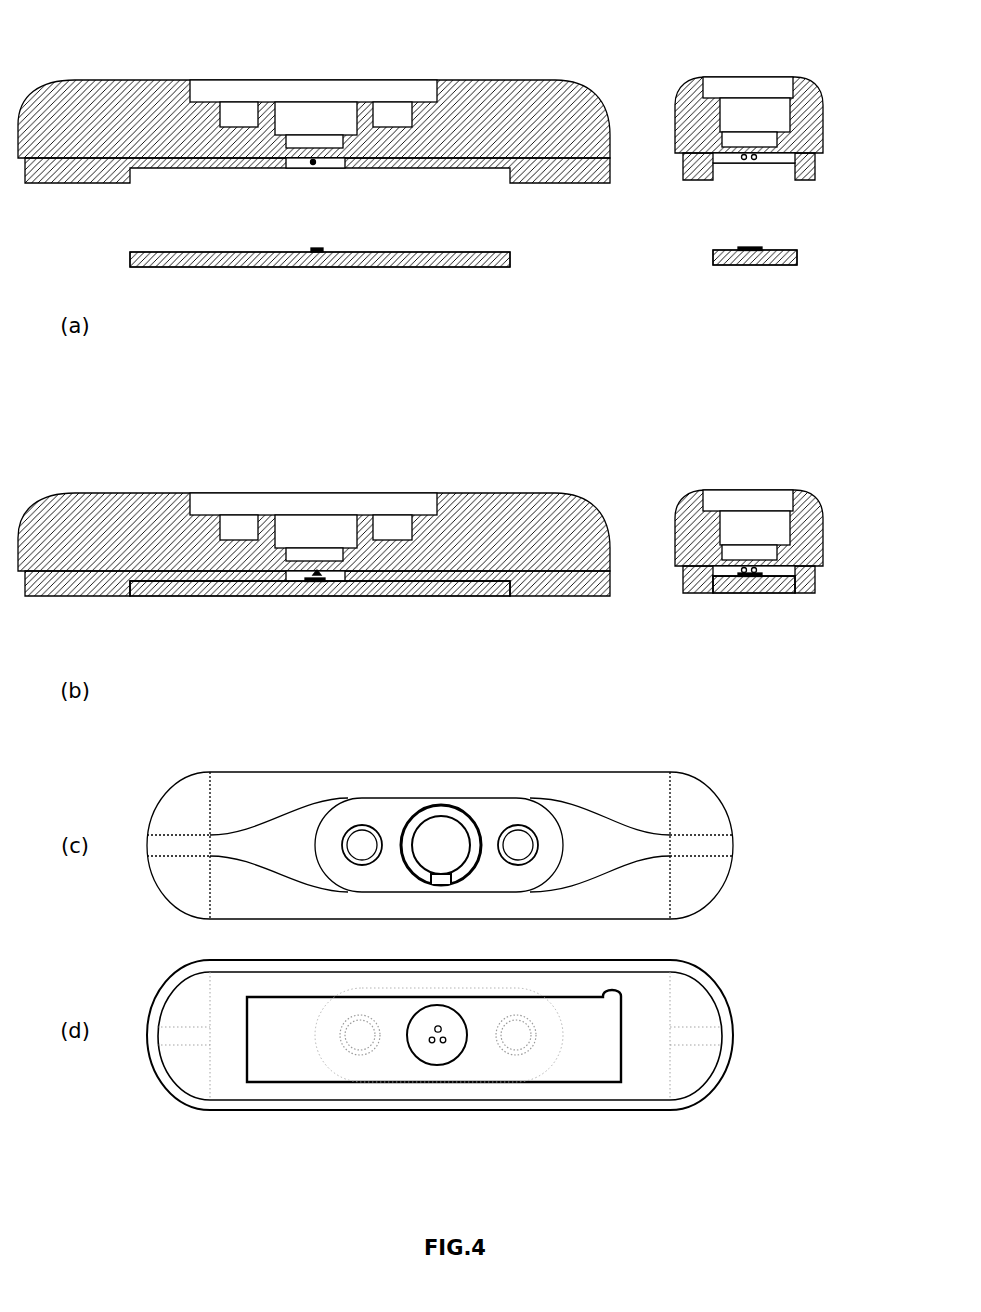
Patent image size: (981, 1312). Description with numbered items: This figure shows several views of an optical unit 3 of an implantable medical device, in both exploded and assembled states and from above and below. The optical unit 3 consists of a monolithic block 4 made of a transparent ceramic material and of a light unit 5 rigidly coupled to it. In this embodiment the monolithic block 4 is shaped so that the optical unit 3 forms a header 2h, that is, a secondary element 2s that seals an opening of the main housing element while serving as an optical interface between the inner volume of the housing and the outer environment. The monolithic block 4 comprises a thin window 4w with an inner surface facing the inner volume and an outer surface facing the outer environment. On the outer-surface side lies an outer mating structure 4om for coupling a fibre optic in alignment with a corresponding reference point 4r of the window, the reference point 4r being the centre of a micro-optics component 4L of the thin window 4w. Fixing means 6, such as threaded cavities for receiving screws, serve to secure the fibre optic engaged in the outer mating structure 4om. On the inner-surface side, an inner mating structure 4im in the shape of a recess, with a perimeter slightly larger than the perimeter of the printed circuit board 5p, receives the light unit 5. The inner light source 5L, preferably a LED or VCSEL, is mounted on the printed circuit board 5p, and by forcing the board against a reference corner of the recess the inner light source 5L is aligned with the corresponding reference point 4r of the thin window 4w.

The monolithic block 4 is at (504, 81).
The inner mating structure 4im is at (190, 170).
The outer mating structure 4om is at (340, 124).
The thin window 4w is at (345, 165).
The reference point 4r is at (313, 164).
The micro-optics component 4L is at (364, 1135).
The fixing means 6 is at (240, 114).
The light unit 5 is at (226, 278).
The printed circuit board 5p is at (395, 268).
The inner light source 5L is at (318, 249).
The secondary element 2s is at (558, 440).
The header 2h is at (645, 440).
The optical unit 3 is at (610, 411).